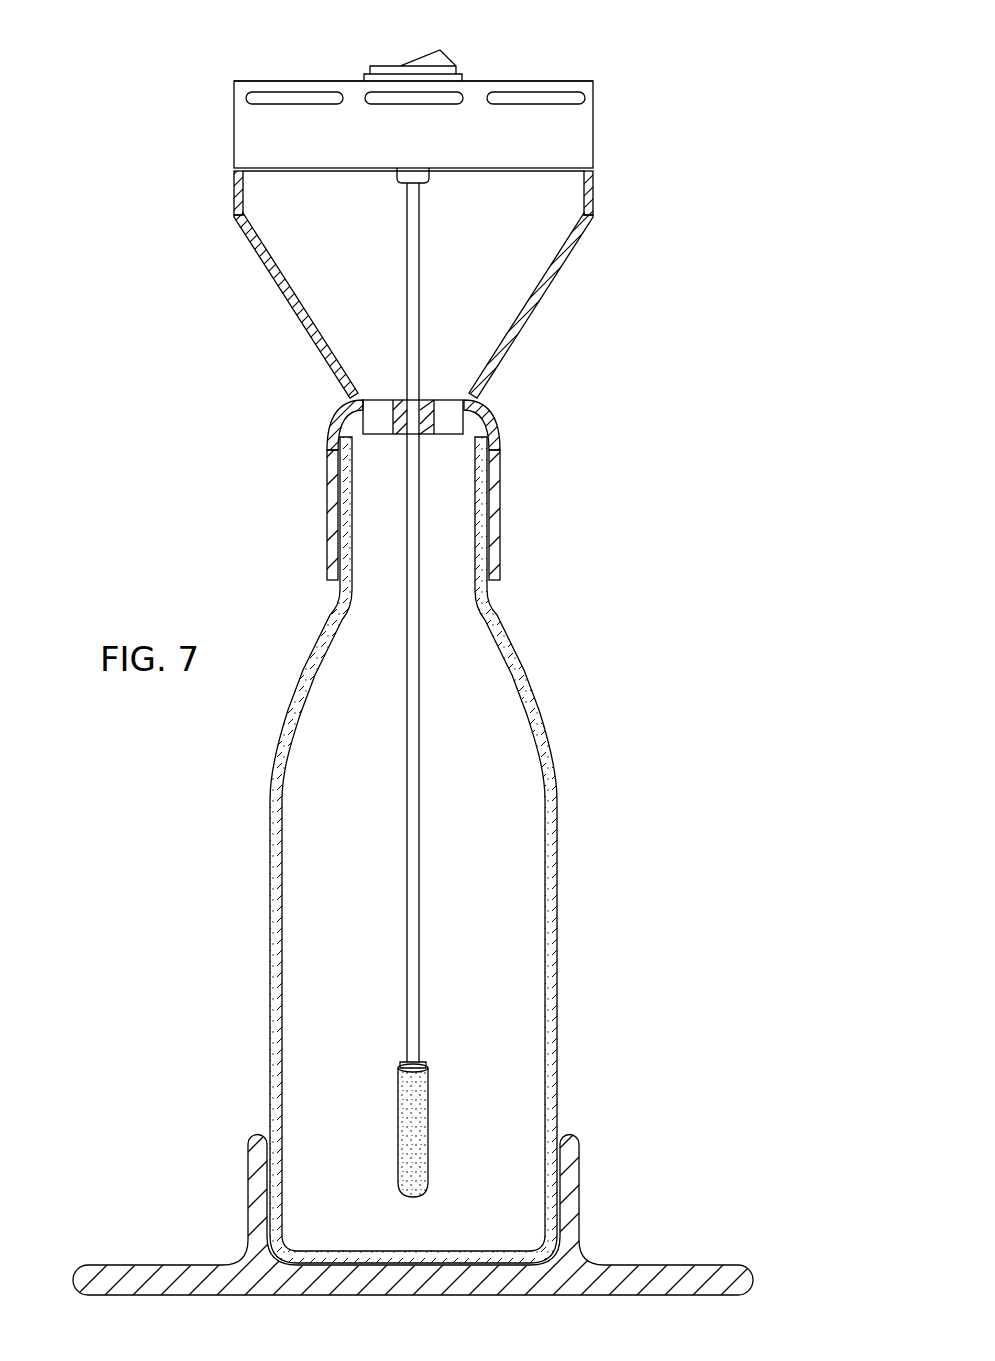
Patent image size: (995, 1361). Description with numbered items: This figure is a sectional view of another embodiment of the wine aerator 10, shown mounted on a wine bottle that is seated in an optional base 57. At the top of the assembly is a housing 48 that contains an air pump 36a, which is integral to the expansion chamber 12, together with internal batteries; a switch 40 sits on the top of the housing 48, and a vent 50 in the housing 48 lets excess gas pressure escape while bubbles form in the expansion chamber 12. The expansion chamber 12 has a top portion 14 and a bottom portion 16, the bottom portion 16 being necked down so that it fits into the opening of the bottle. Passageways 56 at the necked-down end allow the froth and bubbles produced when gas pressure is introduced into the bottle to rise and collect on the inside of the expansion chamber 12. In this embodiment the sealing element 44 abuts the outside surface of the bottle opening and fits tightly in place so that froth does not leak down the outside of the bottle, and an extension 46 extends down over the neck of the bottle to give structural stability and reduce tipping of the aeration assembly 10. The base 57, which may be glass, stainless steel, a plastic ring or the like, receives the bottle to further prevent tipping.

The aerator 10 is at (114, 45).
The expansion chamber 12 is at (264, 268).
The top portion 14 is at (234, 187).
The bottom portion 16 is at (330, 437).
The air pump 36a is at (465, 118).
The switch 40 is at (400, 65).
The sealing element 44 is at (500, 447).
The extension 46 is at (492, 527).
The housing 48 is at (594, 86).
The vent 50 is at (559, 98).
The passageways 56 is at (447, 418).
The base 57 is at (668, 1265).